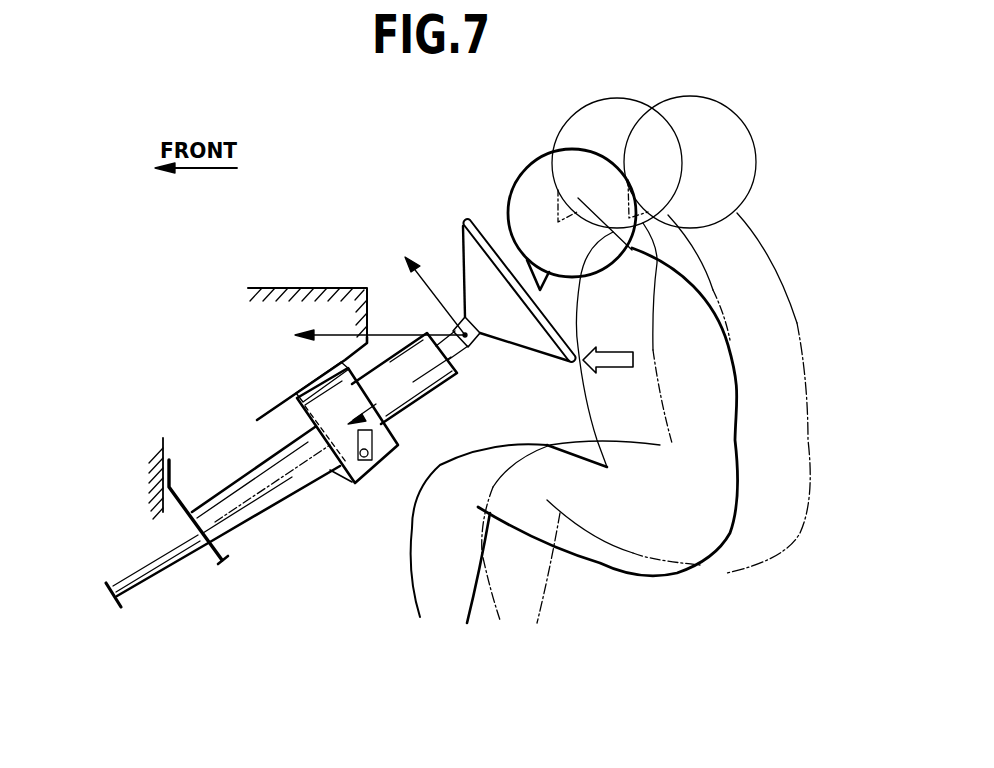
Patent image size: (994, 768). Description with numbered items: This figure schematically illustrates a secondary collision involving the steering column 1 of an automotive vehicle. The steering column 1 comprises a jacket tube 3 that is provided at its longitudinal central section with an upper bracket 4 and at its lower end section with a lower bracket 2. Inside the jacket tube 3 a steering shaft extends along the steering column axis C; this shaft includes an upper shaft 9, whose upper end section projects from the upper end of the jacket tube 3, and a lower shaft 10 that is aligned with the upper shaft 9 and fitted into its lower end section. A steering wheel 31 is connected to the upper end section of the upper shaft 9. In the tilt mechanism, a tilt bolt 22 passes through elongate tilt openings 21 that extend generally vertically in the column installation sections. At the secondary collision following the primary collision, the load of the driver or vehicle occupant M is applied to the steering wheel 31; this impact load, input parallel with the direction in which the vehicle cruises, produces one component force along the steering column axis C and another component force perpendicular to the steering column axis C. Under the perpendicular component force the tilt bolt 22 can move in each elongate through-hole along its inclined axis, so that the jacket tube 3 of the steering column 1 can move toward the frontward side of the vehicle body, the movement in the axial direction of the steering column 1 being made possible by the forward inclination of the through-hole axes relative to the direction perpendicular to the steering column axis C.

The steering column axis C is at (226, 509).
The steering column 1 is at (244, 458).
The lower bracket 2 is at (212, 556).
The jacket tube 3 is at (424, 400).
The upper bracket 4 is at (386, 463).
The upper shaft 9 is at (477, 342).
The lower shaft 10 is at (150, 574).
The elongate tilt opening 21 is at (345, 462).
The tilt bolt 22 is at (363, 462).
The steering wheel 31 is at (478, 212).
The vehicle occupant M is at (708, 277).